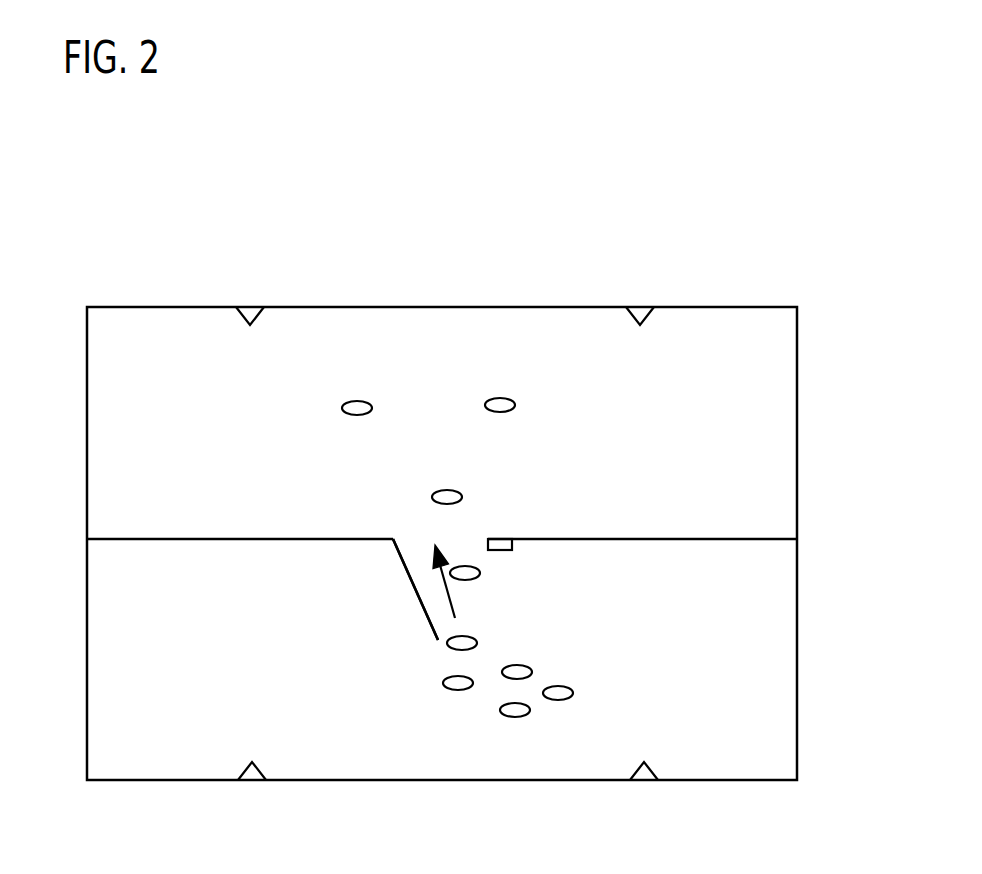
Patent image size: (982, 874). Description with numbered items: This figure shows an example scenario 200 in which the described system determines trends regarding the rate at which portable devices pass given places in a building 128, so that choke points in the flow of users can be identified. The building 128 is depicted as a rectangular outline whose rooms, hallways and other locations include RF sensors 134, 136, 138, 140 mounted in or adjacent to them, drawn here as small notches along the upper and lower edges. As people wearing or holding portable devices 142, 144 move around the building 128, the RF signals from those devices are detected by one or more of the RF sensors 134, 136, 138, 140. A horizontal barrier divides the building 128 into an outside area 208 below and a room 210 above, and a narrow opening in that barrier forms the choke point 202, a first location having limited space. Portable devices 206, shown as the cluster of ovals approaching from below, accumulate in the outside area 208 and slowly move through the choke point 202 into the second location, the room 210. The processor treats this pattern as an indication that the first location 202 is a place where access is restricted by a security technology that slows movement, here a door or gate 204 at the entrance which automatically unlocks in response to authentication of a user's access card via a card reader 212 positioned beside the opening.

The building 128 is at (714, 307).
The RF sensor 134 is at (254, 305).
The RF sensor 136 is at (644, 305).
The RF sensor 138 is at (252, 780).
The RF sensor 140 is at (646, 780).
The portable device 142 is at (461, 494).
The portable device 144 is at (477, 640).
The example scenario 200 is at (702, 97).
The choke point 202 is at (418, 530).
The gate 204 is at (417, 590).
The portable devices 206 is at (485, 733).
The outside area 208 is at (773, 603).
The room 210 is at (765, 482).
The card reader 212 is at (505, 550).